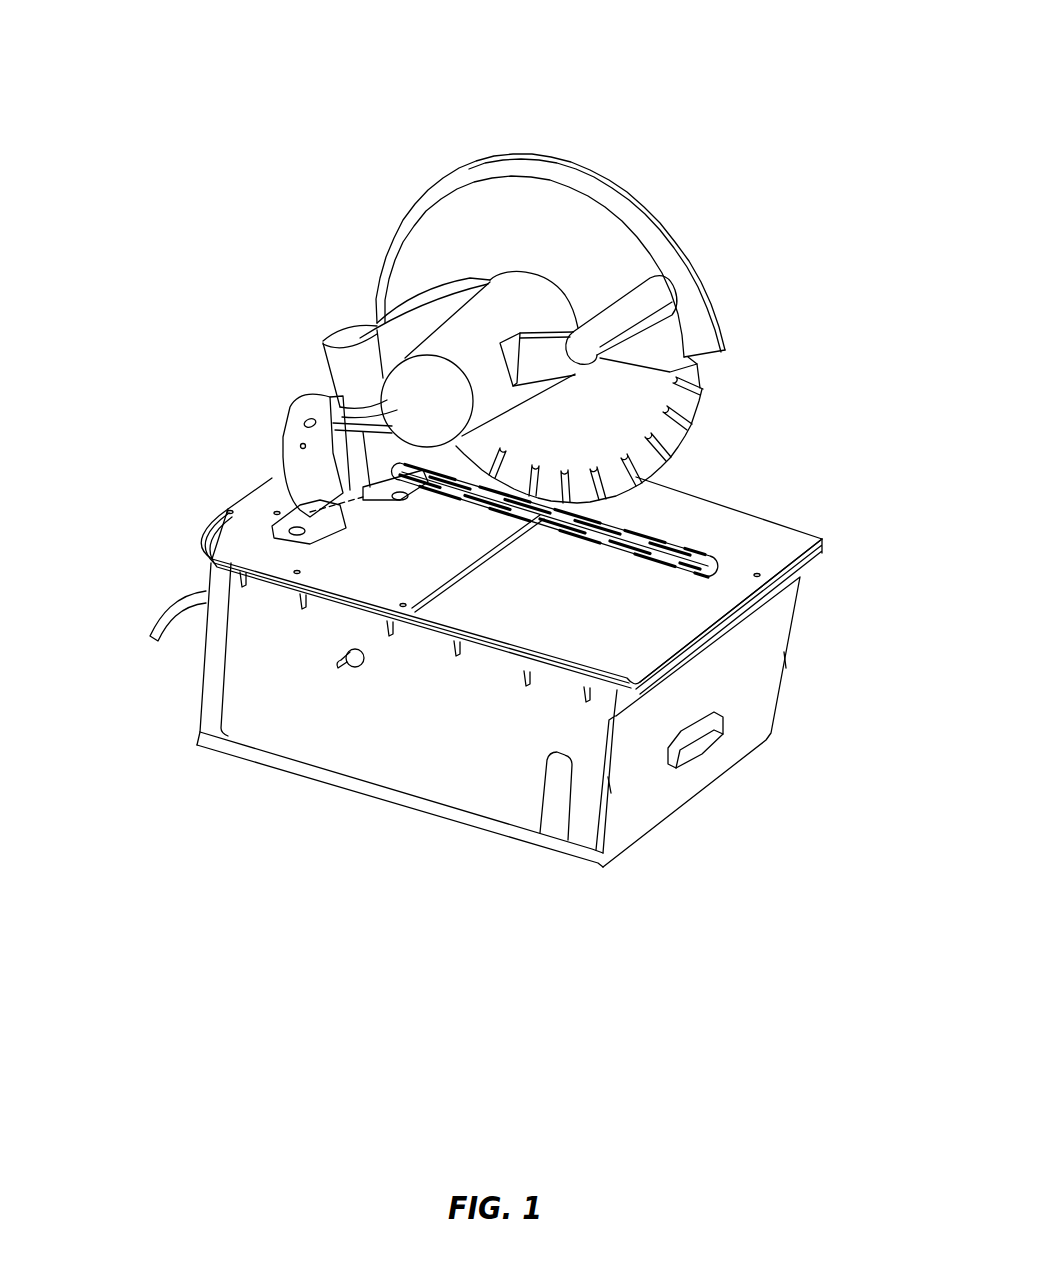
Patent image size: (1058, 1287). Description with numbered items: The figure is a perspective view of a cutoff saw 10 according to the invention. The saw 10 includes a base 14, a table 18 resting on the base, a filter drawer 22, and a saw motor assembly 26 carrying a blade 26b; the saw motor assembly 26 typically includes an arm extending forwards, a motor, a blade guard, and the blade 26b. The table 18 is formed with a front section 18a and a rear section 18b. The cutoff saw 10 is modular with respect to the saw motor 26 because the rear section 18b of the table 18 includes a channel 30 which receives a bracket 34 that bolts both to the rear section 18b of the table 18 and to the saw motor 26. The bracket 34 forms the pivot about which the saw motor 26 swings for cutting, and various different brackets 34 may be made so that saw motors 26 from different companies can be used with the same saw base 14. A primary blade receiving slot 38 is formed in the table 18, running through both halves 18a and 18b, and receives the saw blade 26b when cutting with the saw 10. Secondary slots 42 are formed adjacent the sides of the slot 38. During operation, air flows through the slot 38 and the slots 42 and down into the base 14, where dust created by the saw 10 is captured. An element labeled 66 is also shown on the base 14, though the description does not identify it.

The cutoff saw 10 is at (780, 119).
The base 14 is at (466, 733).
The table 18 is at (757, 547).
The front section 18a is at (598, 616).
The rear section 18b is at (412, 564).
The filter drawer 22 is at (638, 786).
The saw motor assembly 26 is at (530, 238).
The blade 26b is at (620, 426).
The channel 30 is at (258, 531).
The bracket 34 is at (306, 516).
The blade receiving slot 38 is at (706, 574).
The secondary slots 42 is at (690, 540).
The switch knob 66 is at (338, 668).